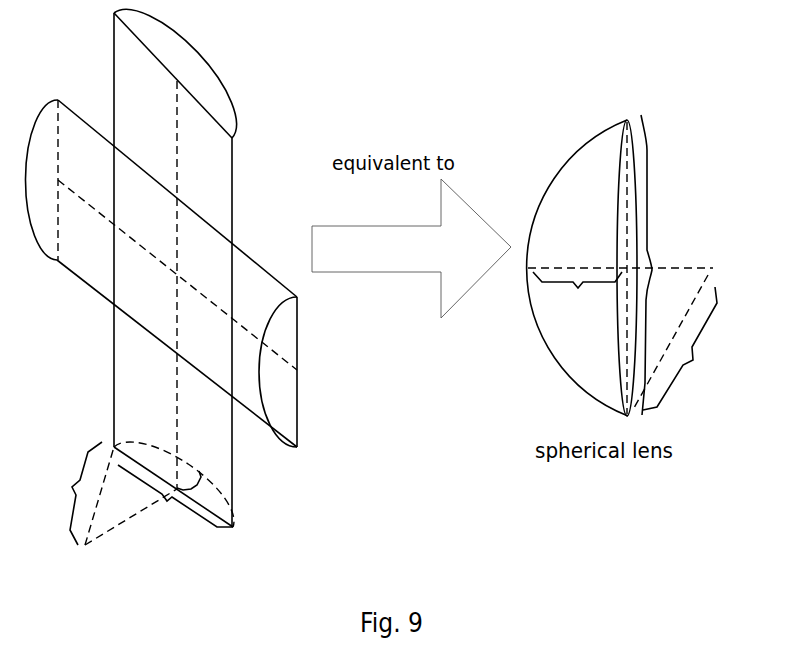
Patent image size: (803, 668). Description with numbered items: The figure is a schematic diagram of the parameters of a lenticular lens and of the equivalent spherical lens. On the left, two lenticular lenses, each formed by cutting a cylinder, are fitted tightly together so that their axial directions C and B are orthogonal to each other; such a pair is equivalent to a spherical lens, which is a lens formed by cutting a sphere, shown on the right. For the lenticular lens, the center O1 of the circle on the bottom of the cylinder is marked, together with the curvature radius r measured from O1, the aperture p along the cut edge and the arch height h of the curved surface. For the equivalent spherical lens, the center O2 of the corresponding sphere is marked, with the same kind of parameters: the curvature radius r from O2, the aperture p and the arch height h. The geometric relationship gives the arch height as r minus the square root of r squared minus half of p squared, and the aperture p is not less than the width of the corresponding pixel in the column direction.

The axial direction of lenticular lens C is at (175, 268).
The axial direction of lenticular lens B is at (171, 273).
The center of the circle on the bottom of the cylinder O1 is at (122, 509).
The center of the sphere O2 is at (633, 265).
The curvature radius r is at (385, 416).
The arch height h is at (399, 389).
The aperture p is at (395, 384).